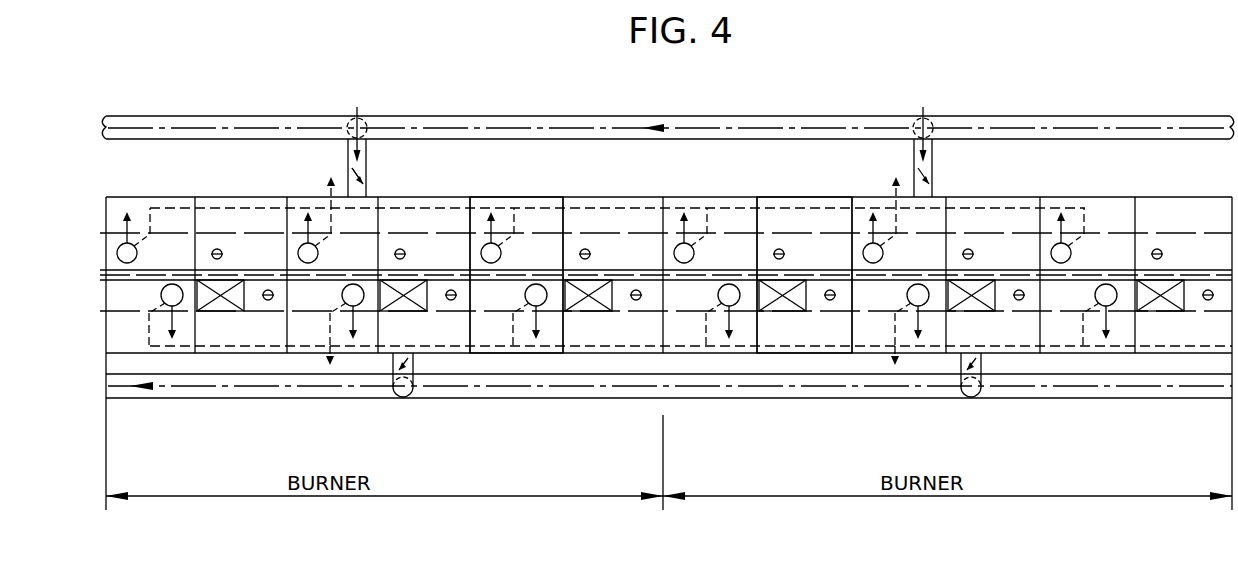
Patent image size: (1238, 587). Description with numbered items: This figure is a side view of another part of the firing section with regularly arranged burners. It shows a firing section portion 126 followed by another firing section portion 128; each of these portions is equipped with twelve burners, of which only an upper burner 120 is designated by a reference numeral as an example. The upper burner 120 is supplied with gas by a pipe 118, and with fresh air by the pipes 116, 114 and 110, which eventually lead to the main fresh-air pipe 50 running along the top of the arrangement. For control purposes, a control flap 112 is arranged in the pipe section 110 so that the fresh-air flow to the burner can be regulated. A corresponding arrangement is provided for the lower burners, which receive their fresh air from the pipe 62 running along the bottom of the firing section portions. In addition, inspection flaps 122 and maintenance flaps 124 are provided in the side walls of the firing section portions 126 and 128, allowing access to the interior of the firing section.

The pipe 50 is at (516, 128).
The pipe 62 is at (512, 400).
The pipe 110 is at (366, 146).
The control flap 112 is at (351, 172).
The pipe 114 is at (216, 207).
The pipe 116 is at (163, 208).
The pipe 118 is at (123, 213).
The upper burner 120 is at (115, 253).
The inspection flap 122 is at (230, 253).
The maintenance flap 124 is at (227, 310).
The firing section portion 126 is at (501, 197).
The firing section portion 128 is at (807, 197).